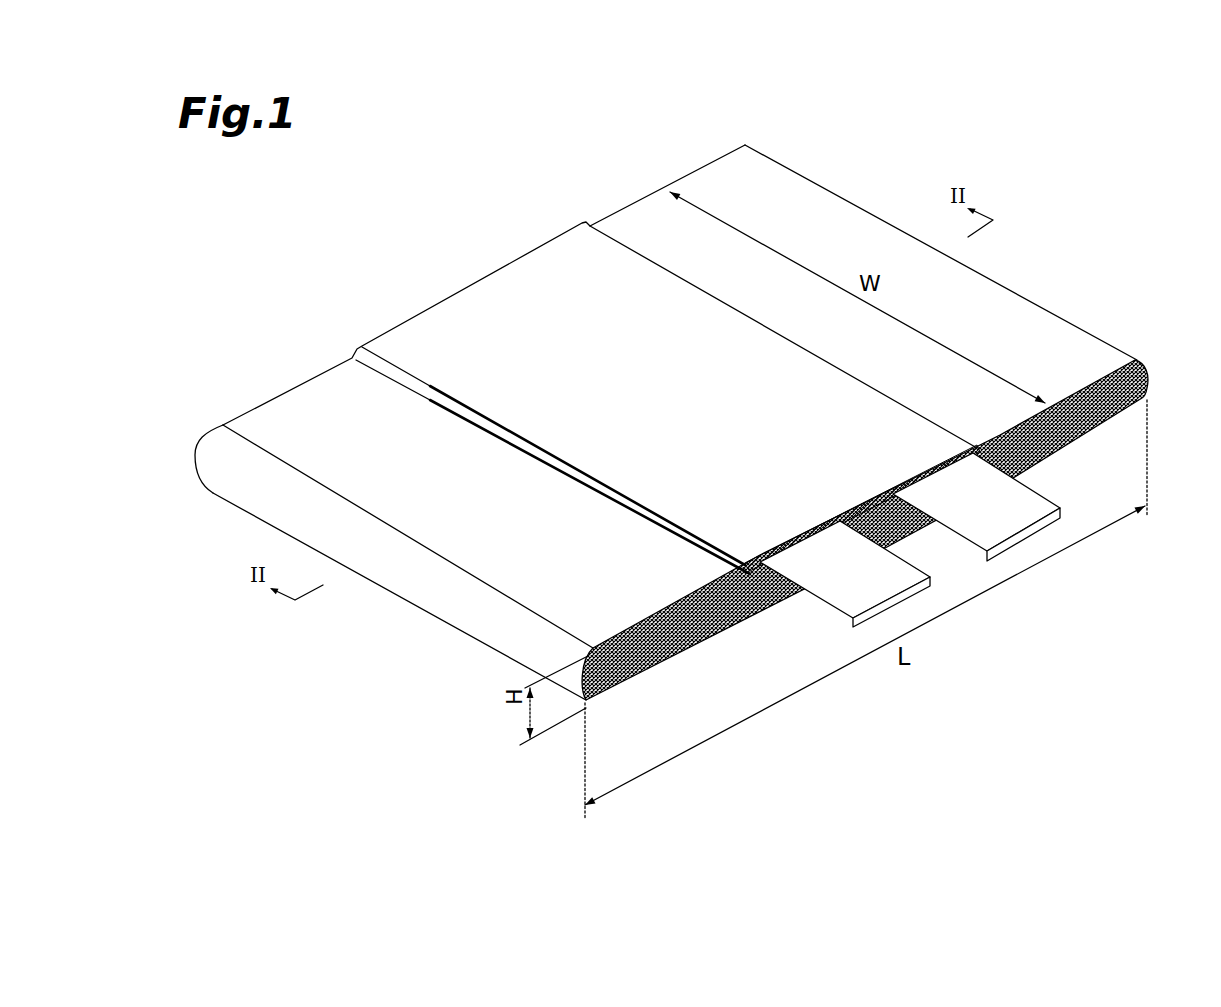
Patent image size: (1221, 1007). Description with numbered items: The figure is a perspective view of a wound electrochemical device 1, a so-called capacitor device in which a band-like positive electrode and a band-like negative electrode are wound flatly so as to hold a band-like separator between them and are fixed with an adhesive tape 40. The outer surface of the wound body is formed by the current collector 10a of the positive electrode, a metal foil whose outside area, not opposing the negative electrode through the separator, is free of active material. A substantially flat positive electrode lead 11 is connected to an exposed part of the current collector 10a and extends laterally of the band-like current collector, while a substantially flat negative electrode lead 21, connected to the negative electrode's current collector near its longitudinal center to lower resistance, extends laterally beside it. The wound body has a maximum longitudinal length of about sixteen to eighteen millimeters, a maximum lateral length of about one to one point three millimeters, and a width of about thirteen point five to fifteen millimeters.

The wound electrochemical device 1 is at (420, 228).
The current collector 10a is at (1038, 340).
The positive electrode lead 11 is at (843, 586).
The negative electrode lead 21 is at (1003, 503).
The adhesive tape 40 is at (410, 582).